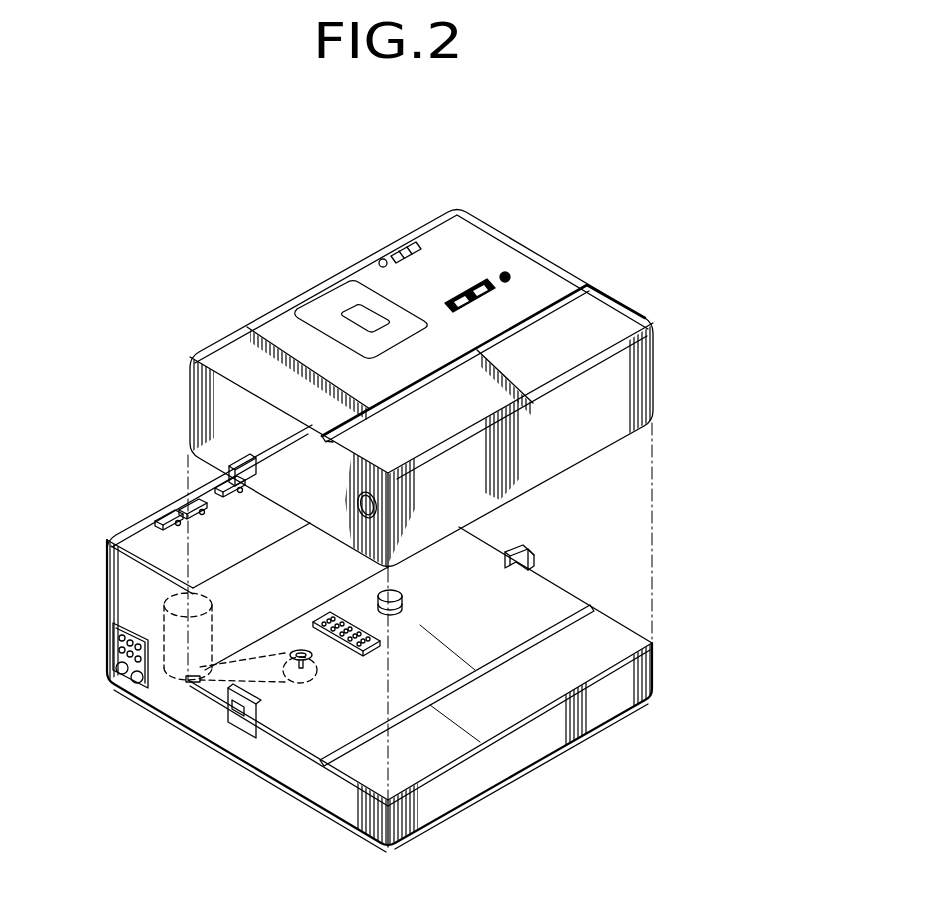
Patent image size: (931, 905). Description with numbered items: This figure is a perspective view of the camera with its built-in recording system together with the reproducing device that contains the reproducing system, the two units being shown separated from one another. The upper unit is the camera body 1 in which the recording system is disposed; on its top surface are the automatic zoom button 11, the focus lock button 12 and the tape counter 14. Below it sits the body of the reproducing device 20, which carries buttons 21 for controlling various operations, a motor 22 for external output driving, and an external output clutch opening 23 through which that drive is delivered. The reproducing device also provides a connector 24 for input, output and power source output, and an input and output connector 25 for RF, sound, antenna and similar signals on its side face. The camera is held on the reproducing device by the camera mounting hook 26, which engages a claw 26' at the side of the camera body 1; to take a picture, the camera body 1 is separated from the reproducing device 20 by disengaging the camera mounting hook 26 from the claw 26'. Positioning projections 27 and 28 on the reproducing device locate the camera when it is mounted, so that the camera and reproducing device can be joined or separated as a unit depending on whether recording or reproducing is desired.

The camera body 1 is at (607, 306).
The automatic zoom button 11 is at (478, 287).
The focus lock button 12 is at (509, 278).
The tape counter 14 is at (401, 245).
The body of the reproducing device 20 is at (507, 703).
The buttons 21 is at (225, 480).
The motor 22 is at (172, 672).
The external output clutch opening 23 is at (300, 678).
The connector 24 is at (345, 653).
The input and output connector 25 is at (113, 648).
The camera mounting hook 26 is at (381, 654).
The claw 26' is at (264, 464).
The positioning projection 27 is at (403, 600).
The positioning projection 28 is at (497, 656).